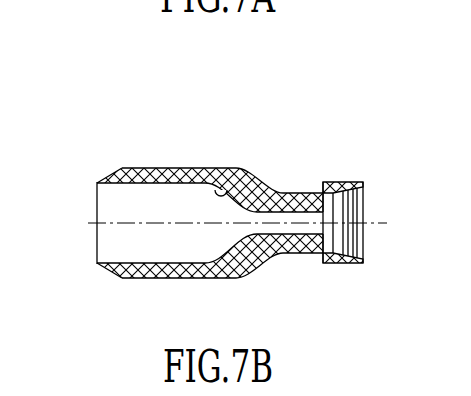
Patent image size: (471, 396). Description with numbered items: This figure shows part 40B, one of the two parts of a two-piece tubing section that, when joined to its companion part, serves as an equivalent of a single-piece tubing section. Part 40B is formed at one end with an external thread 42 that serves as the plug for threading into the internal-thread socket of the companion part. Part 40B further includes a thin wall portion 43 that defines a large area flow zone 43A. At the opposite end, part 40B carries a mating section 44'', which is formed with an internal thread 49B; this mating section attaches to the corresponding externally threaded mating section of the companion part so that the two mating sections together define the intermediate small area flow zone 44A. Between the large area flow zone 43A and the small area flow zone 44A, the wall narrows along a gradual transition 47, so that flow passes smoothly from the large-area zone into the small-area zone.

The part 40B is at (150, 142).
The external thread 42 is at (110, 171).
The thin wall portion 43 is at (190, 167).
The large area flow zone 43A is at (160, 209).
The gradual transition 47 is at (223, 177).
The small area flow zone 44A is at (287, 217).
The mating section 44'' is at (371, 239).
The internal thread 49B is at (350, 212).